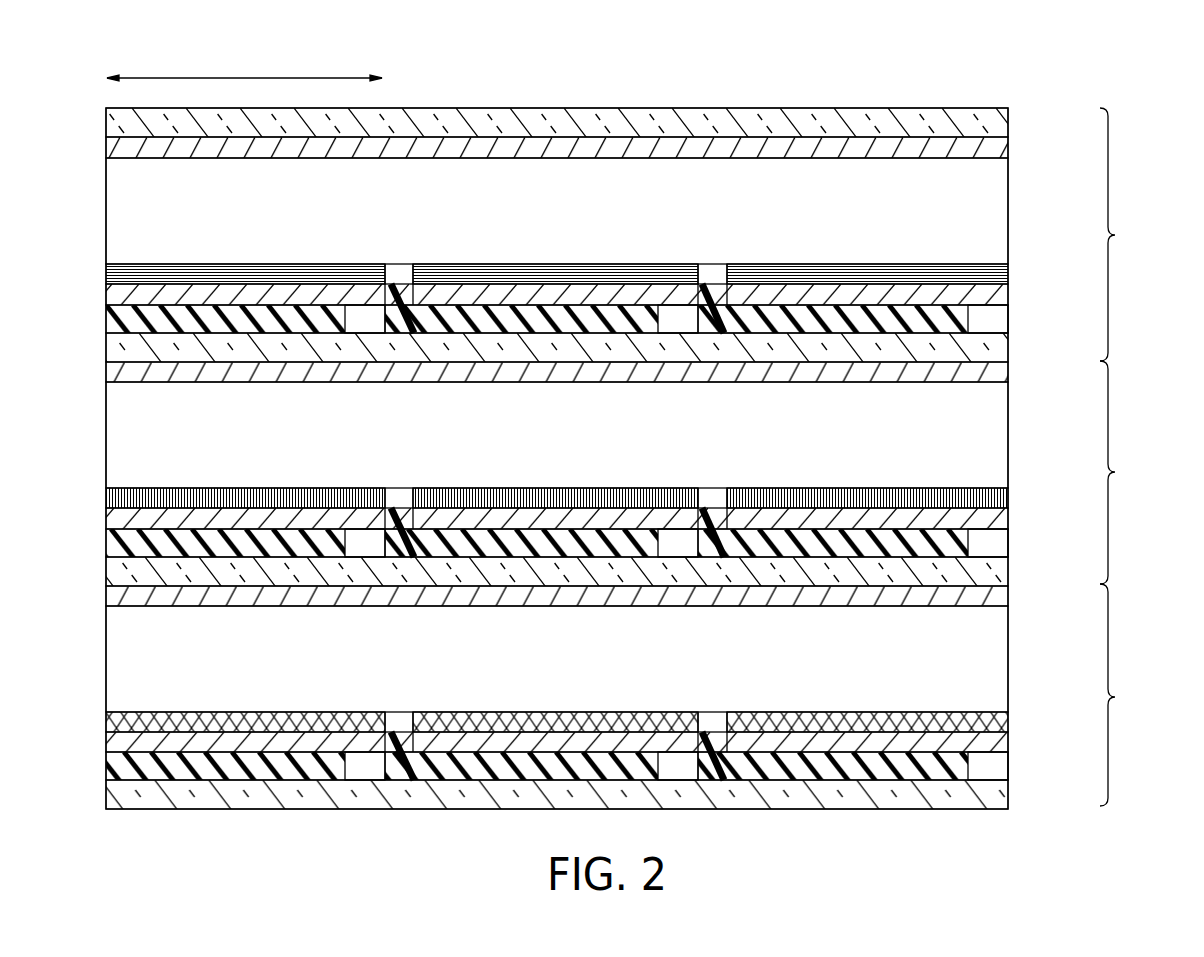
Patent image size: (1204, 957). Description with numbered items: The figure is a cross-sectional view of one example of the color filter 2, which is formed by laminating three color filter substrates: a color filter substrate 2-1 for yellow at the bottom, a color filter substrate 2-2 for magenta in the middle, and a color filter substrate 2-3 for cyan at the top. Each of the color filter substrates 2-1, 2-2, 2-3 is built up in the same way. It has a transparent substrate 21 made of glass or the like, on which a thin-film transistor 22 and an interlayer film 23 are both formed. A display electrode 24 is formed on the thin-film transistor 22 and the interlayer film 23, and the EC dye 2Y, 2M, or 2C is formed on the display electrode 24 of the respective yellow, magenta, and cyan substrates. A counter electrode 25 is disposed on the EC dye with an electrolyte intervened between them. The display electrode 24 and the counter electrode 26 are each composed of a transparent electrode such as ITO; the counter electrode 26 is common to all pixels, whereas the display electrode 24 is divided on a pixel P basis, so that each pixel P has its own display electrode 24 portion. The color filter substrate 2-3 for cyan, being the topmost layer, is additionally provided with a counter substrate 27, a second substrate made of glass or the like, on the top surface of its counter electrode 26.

The color filter 2 is at (1065, 72).
The color filter substrate for yellow 2-1 is at (1128, 695).
The color filter substrate for magenta 2-2 is at (1128, 472).
The color filter substrate for cyan 2-3 is at (1128, 234).
The EC dye for cyan 2C is at (994, 275).
The EC dye for magenta 2M is at (994, 499).
The EC dye for yellow 2Y is at (994, 722).
The transparent substrate 21 is at (992, 348).
The thin-film transistor 22 is at (680, 765).
The interlayer film 23 is at (840, 774).
The display electrode 24 is at (113, 298).
The counter electrode 25 is at (113, 221).
The counter electrode 26 is at (990, 149).
The counter substrate 27 is at (993, 124).
The pixel P is at (244, 67).